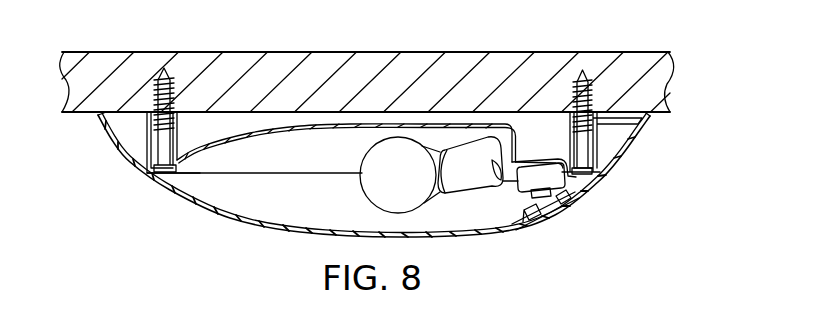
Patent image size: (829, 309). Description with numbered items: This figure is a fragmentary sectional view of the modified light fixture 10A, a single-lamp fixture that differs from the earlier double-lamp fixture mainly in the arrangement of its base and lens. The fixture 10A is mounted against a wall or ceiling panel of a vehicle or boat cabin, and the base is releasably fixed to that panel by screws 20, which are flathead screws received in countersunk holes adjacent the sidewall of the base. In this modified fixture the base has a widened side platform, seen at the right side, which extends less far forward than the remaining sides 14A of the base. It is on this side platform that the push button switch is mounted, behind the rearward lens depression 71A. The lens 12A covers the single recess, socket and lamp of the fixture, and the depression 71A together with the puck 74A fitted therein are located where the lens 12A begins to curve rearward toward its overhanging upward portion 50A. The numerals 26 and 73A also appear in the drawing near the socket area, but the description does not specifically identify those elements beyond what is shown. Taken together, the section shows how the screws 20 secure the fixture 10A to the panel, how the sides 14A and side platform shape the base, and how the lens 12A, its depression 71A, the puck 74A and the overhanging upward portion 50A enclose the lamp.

The modified light fixture 10A is at (217, 245).
The lens 12A is at (284, 238).
The sides 14A is at (147, 140).
The screws 20 is at (537, 163).
The socket bracket 26 is at (541, 178).
The overhanging upward portion 50A is at (628, 152).
The rearward lens depression 71A is at (558, 208).
The tab 73A is at (545, 198).
The puck 74A is at (523, 222).